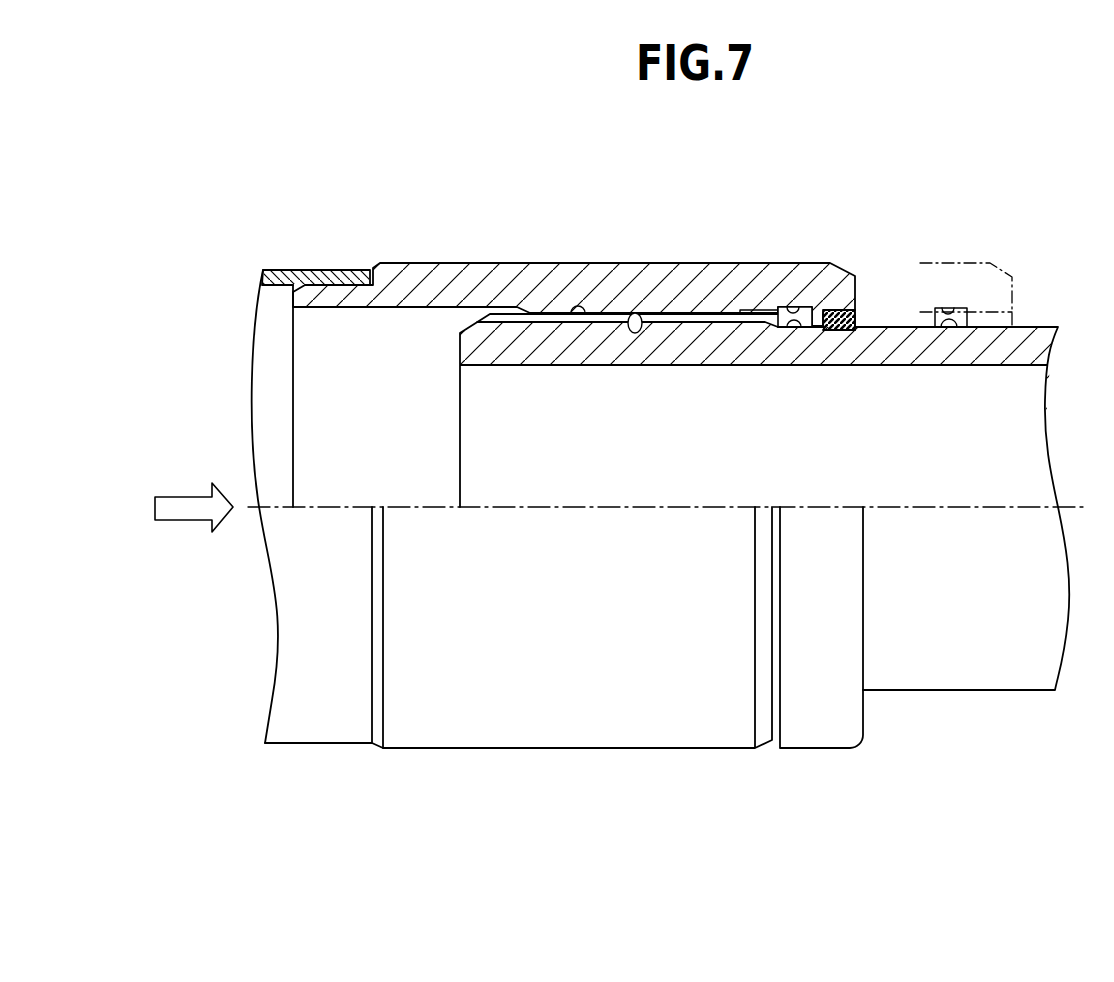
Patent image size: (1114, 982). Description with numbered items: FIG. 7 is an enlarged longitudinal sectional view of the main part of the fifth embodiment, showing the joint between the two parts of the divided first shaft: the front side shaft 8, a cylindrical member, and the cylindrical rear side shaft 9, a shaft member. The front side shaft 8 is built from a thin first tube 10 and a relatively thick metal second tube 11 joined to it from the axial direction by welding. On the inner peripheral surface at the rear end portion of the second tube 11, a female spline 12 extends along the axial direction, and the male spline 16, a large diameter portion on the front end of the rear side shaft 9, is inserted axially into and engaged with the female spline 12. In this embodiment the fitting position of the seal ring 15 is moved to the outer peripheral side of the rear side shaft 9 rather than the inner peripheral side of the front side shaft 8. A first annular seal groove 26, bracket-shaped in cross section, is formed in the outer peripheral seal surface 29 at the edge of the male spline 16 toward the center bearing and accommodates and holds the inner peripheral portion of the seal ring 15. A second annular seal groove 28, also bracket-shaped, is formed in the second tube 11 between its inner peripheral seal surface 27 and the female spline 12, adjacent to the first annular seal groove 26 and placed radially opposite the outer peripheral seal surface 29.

The front side shaft 8 is at (420, 252).
The rear side shaft 9 is at (1018, 343).
The first tube 10 is at (292, 270).
The second tube 11 is at (534, 280).
The female spline 12 is at (650, 316).
The seal ring 15 is at (858, 320).
The male spline 16 is at (588, 312).
The first annular seal groove 26 is at (828, 331).
The inner peripheral seal surface 27 is at (828, 310).
The second annular seal groove 28 is at (790, 307).
The outer peripheral seal surface 29 is at (790, 328).